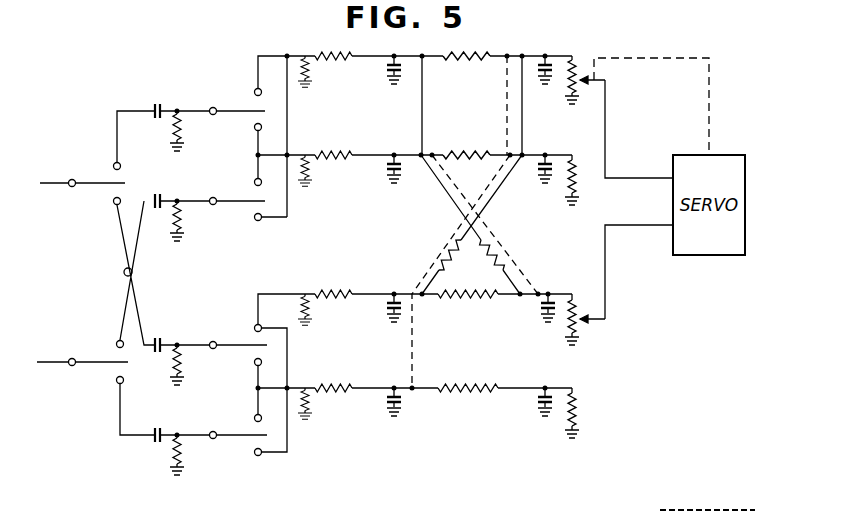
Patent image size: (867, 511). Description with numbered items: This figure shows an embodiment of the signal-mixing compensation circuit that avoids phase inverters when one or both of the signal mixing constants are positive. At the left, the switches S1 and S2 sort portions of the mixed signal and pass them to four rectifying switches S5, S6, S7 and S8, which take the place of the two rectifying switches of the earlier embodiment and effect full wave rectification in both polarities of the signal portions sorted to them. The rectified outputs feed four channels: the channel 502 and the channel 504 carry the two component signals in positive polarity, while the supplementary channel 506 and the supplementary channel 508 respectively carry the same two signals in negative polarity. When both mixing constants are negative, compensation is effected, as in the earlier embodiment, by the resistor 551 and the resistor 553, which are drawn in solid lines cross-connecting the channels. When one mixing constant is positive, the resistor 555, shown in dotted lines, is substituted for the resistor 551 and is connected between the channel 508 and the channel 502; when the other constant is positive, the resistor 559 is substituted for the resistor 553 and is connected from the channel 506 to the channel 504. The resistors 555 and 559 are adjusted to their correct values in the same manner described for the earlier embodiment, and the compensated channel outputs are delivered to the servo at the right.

The switch S1 is at (90, 187).
The switch S2 is at (90, 366).
The switch S5 is at (227, 114).
The switch S6 is at (227, 204).
The switch S7 is at (227, 348).
The switch S8 is at (227, 438).
The grounding resistor 502 is at (308, 66).
The grounding resistor 504 is at (308, 304).
The grounding resistor 506 is at (308, 165).
The grounding resistor 508 is at (308, 398).
The cross-coupling resistor 551 is at (443, 270).
The cross-coupling resistor 553 is at (497, 267).
The dashed coupling connection 555 is at (438, 252).
The dashed coupling connection 559 is at (501, 242).